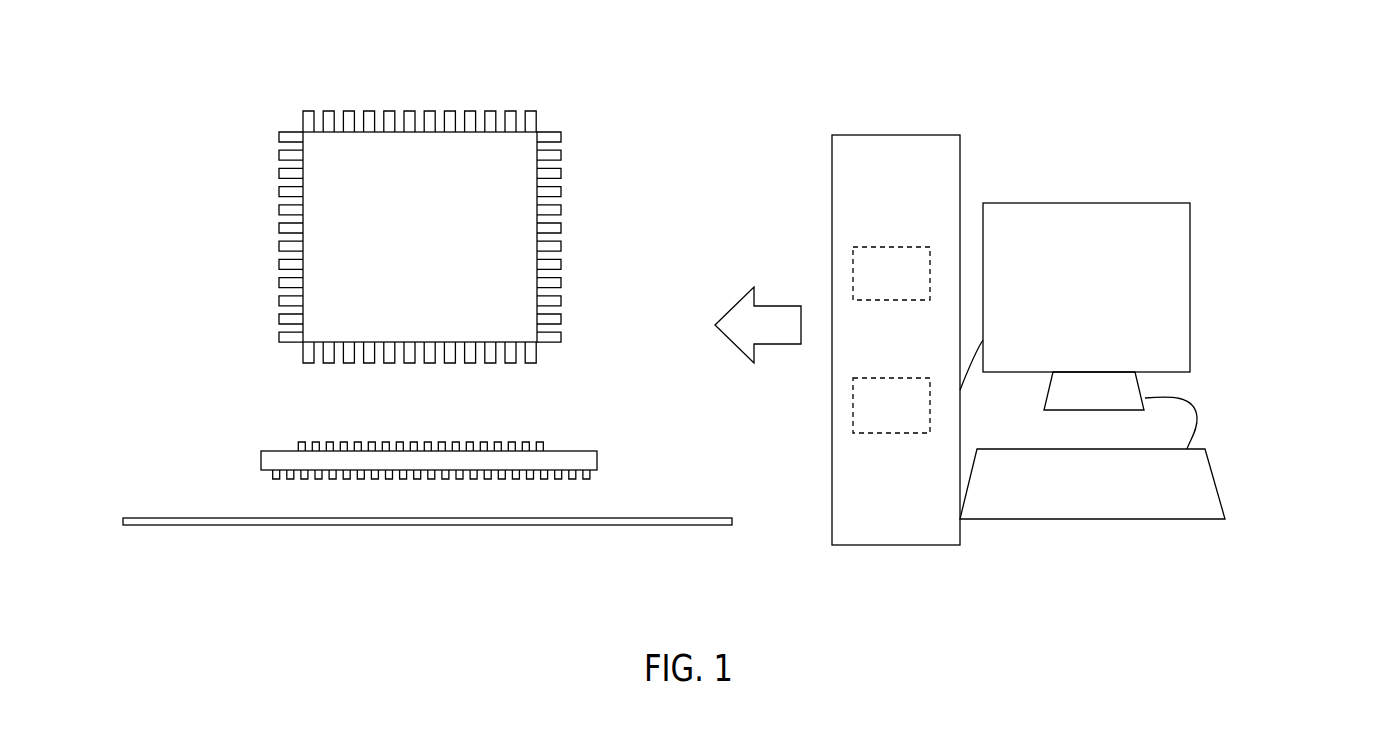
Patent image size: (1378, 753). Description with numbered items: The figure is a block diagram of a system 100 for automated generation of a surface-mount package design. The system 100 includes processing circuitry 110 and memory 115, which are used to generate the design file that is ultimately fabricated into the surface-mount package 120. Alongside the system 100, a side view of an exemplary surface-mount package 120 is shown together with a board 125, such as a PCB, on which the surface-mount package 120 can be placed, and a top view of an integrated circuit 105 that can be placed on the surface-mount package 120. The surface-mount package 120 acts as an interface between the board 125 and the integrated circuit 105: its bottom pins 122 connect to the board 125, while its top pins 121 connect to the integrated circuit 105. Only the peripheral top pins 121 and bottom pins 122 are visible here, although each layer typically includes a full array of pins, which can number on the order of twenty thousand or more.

The system 100 is at (1226, 113).
The integrated circuit 105 is at (437, 249).
The processing circuitry 110 is at (891, 273).
The memory 115 is at (891, 405).
The surface-mount package 120 is at (261, 466).
The top pins 121 is at (550, 433).
The bottom pins 122 is at (591, 482).
The board 125 is at (143, 528).